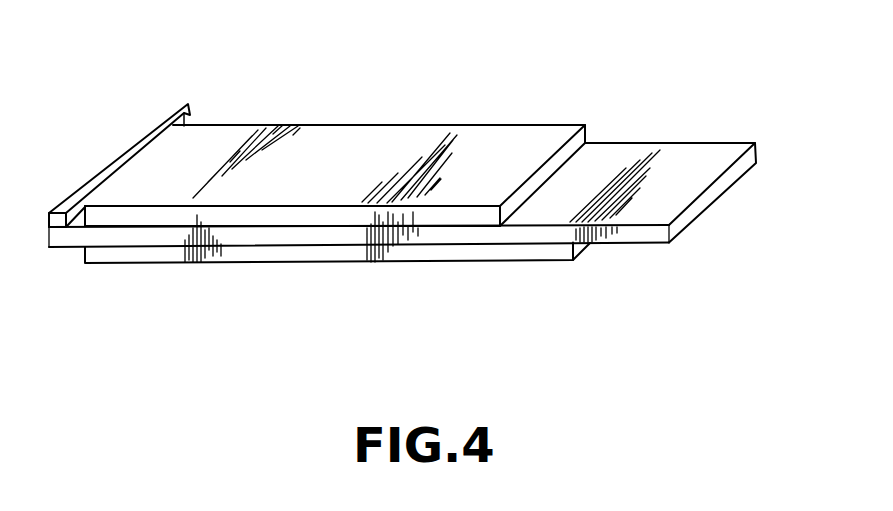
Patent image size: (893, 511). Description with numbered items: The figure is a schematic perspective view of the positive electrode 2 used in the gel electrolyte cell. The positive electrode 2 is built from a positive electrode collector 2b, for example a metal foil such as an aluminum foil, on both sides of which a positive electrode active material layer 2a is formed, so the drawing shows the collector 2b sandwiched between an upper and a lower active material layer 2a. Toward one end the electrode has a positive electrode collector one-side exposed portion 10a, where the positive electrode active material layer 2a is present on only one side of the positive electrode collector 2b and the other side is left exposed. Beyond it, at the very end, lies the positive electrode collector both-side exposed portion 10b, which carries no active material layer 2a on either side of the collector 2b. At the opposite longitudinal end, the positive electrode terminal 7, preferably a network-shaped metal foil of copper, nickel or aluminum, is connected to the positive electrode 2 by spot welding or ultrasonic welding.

The positive electrode 2 is at (570, 80).
The positive electrode active material layer 2a is at (413, 140).
The positive electrode collector 2b is at (293, 237).
The positive electrode terminal 7 is at (167, 112).
The positive electrode collector one-side exposed portion 10a is at (603, 168).
The positive electrode collector both-side exposed portion 10b is at (697, 176).